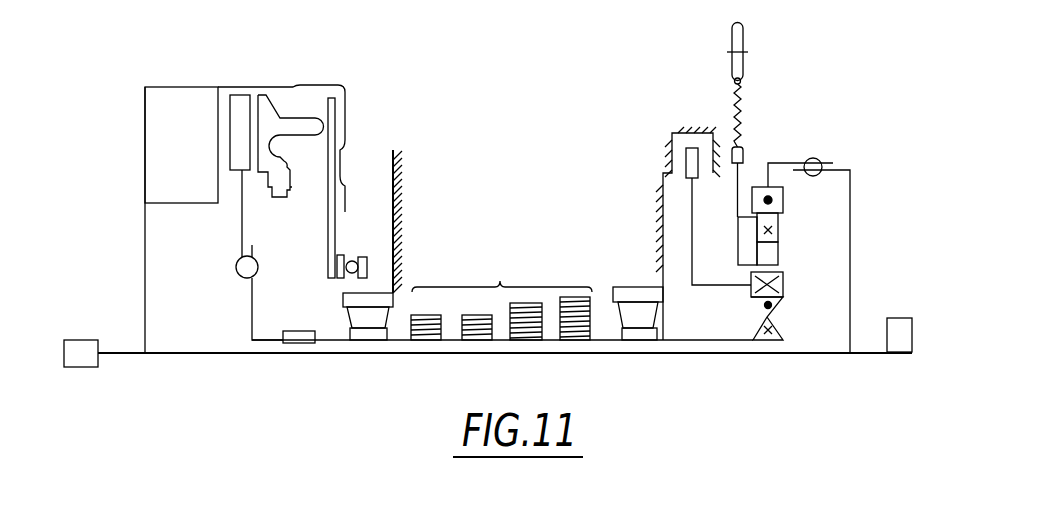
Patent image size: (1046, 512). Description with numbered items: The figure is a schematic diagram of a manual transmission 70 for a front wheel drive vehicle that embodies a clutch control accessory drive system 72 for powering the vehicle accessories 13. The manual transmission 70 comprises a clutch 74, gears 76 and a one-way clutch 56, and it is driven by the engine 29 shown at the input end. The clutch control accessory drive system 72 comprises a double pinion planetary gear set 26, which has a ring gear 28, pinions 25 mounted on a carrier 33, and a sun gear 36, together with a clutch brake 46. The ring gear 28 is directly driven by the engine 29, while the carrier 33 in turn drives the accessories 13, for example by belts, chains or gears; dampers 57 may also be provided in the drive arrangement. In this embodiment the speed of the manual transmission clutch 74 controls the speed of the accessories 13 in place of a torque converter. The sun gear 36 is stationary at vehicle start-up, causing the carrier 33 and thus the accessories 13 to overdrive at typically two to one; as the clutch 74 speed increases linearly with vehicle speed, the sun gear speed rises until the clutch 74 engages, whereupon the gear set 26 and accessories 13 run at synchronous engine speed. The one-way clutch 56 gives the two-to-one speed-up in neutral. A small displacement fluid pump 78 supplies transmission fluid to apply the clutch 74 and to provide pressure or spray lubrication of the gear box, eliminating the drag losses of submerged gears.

The manual transmission 70 is at (130, 72).
The clutch 74 is at (296, 100).
The clutch control accessory drive system 72 is at (483, 101).
The accessories 13 is at (744, 60).
The dampers 57 is at (236, 266).
The clutch brake 46 is at (678, 142).
The ring gear 28 is at (785, 198).
The planetary gear set 26 is at (842, 203).
The pinions 25 is at (780, 243).
The carrier 33 is at (738, 240).
The sun gear 36 is at (785, 280).
The one-way clutch 56 is at (775, 323).
The gears 76 is at (501, 293).
The fluid pump 78 is at (893, 318).
The engine 29 is at (121, 383).